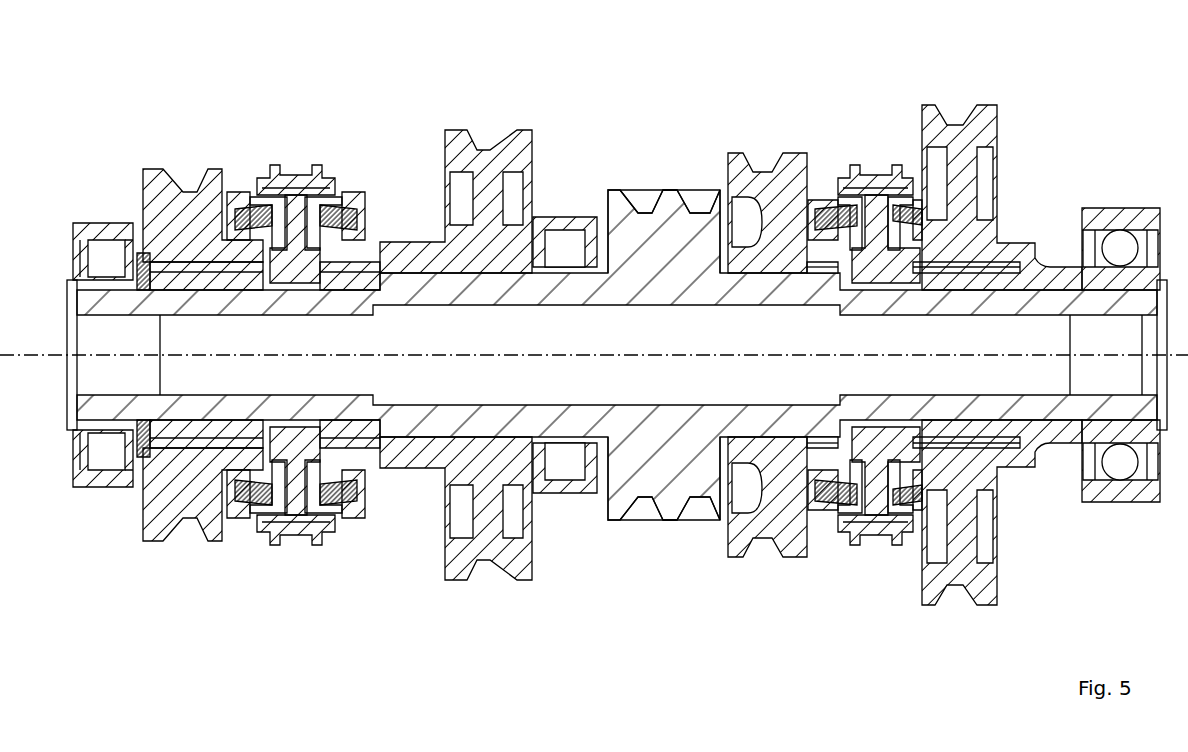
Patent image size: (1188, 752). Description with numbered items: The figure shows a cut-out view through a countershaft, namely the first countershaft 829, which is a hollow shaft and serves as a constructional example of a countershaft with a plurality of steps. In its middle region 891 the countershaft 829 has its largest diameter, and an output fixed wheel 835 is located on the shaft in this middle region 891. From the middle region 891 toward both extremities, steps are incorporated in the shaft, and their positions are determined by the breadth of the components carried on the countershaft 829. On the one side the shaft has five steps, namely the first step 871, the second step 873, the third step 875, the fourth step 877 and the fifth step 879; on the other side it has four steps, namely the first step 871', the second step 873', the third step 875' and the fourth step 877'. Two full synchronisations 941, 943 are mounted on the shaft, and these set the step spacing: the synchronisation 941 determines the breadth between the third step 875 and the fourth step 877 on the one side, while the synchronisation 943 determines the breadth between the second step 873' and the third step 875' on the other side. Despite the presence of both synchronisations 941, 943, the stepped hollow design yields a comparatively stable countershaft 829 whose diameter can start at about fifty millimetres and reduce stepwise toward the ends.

The first countershaft 829 is at (103, 160).
The fifth step 879 is at (138, 126).
The fourth step 877 is at (257, 281).
The synchronisation 941 is at (298, 170).
The third step 875 is at (337, 281).
The first step 871 is at (490, 312).
The second step 873 is at (559, 269).
The output fixed wheel 835 is at (673, 188).
The middle region 891 is at (623, 153).
The first step 871' is at (756, 301).
The second step 873' is at (835, 279).
The synchronisation 943 is at (878, 138).
The third step 875' is at (912, 279).
The fourth step 877' is at (1002, 325).